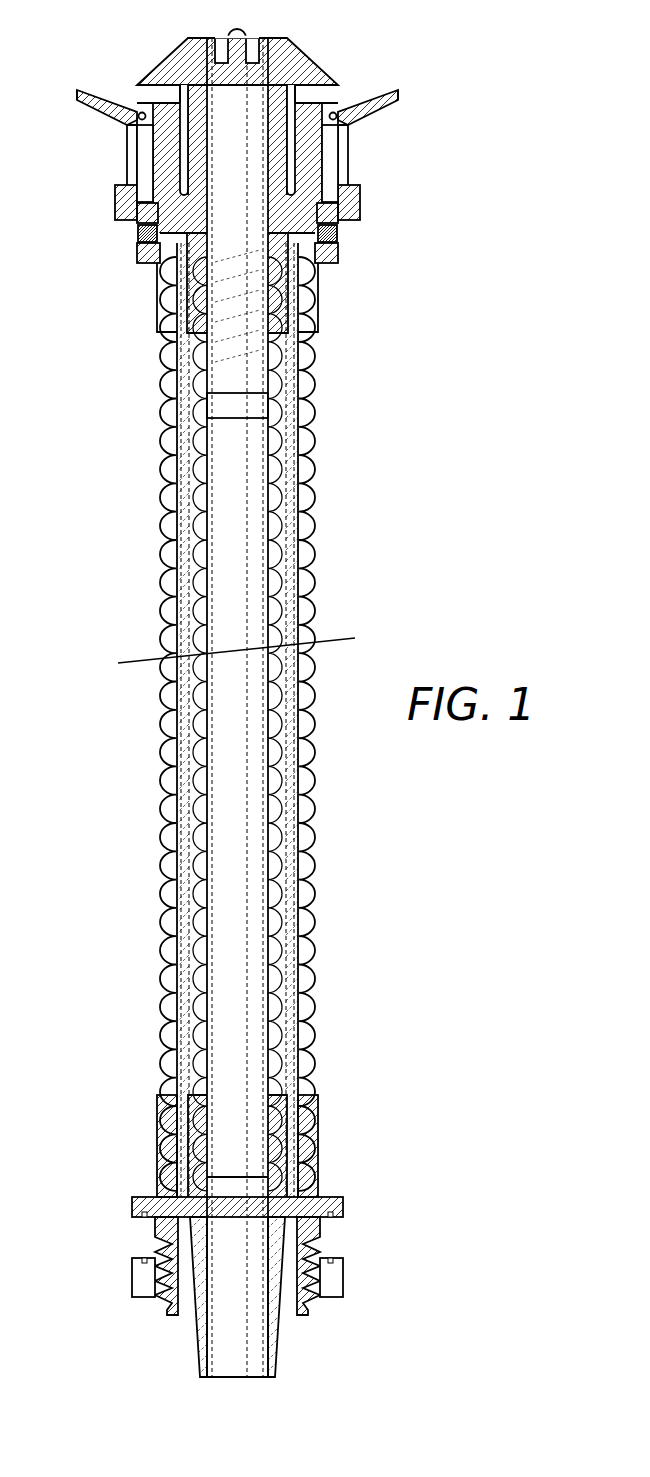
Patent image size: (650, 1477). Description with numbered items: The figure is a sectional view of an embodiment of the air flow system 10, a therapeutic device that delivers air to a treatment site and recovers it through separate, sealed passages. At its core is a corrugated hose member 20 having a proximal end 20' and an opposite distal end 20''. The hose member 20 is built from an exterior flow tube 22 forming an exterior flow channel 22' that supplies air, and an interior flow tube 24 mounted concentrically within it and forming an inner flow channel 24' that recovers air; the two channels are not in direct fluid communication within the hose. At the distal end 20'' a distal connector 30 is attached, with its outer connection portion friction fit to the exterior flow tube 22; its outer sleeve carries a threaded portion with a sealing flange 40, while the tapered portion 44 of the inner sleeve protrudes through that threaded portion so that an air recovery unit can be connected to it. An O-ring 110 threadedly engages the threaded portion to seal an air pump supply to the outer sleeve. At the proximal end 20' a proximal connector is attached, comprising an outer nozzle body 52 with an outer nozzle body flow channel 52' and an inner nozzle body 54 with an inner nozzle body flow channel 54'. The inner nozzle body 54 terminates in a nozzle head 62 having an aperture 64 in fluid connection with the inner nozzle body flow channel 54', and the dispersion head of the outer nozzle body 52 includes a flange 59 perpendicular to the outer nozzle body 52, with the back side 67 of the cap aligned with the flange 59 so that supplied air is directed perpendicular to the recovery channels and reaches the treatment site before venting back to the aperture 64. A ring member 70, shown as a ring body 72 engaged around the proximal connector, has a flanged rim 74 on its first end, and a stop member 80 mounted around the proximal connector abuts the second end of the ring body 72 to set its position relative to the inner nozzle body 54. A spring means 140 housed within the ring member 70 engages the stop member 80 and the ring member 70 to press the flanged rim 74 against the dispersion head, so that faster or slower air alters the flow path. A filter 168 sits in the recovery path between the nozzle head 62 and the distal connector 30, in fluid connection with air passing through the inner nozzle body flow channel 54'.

The air flow system 10 is at (350, 892).
The hose member 20 is at (201, 720).
The proximal end 20' is at (125, 276).
The distal end 20'' is at (126, 1154).
The exterior flow tube 22 is at (194, 720).
The exterior flow channel 22' is at (141, 1005).
The interior flow tube 24 is at (187, 724).
The inner flow channel 24' is at (153, 903).
The distal connector 30 is at (320, 1113).
The sealing flange 40 is at (343, 1198).
The tapered portion 44 is at (272, 1345).
The outer nozzle body 52 is at (268, 287).
The outer nozzle body flow channel 52' is at (275, 159).
The inner nozzle body 54 is at (280, 707).
The inner nozzle body flow channel 54' is at (296, 307).
The flange 59 is at (334, 110).
The nozzle head 62 is at (170, 52).
The aperture 64 is at (235, 62).
The back side 67 is at (307, 80).
The ring member 70 is at (380, 112).
The ring body 72 is at (349, 136).
The flanged rim 74 is at (401, 94).
The stop member 80 is at (145, 222).
The O-ring 110 is at (337, 1285).
The spring means 140 is at (145, 173).
The filter 168 is at (275, 412).